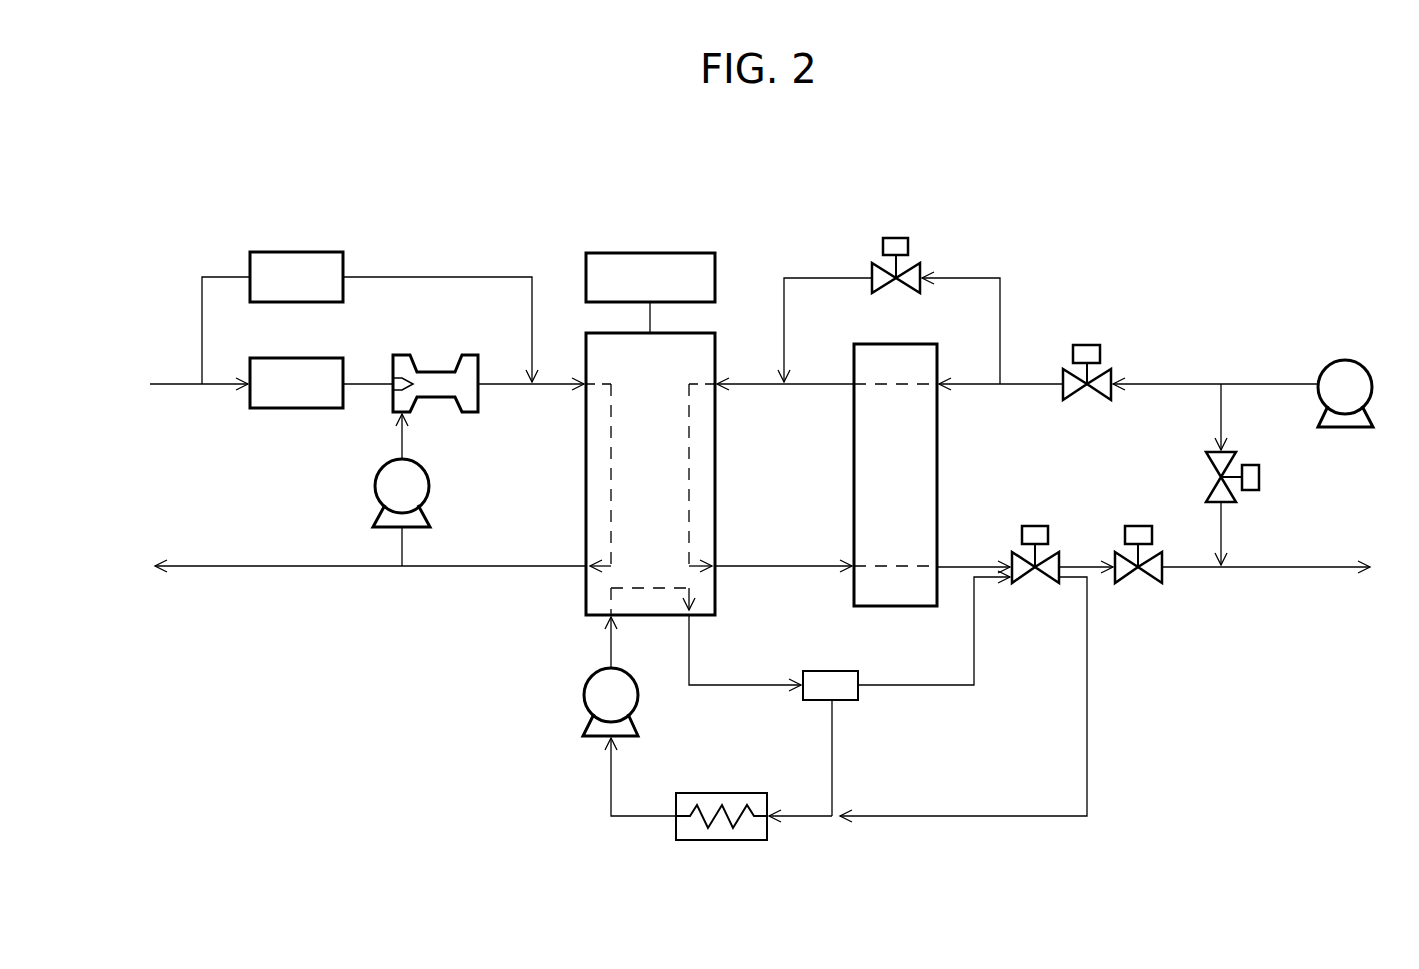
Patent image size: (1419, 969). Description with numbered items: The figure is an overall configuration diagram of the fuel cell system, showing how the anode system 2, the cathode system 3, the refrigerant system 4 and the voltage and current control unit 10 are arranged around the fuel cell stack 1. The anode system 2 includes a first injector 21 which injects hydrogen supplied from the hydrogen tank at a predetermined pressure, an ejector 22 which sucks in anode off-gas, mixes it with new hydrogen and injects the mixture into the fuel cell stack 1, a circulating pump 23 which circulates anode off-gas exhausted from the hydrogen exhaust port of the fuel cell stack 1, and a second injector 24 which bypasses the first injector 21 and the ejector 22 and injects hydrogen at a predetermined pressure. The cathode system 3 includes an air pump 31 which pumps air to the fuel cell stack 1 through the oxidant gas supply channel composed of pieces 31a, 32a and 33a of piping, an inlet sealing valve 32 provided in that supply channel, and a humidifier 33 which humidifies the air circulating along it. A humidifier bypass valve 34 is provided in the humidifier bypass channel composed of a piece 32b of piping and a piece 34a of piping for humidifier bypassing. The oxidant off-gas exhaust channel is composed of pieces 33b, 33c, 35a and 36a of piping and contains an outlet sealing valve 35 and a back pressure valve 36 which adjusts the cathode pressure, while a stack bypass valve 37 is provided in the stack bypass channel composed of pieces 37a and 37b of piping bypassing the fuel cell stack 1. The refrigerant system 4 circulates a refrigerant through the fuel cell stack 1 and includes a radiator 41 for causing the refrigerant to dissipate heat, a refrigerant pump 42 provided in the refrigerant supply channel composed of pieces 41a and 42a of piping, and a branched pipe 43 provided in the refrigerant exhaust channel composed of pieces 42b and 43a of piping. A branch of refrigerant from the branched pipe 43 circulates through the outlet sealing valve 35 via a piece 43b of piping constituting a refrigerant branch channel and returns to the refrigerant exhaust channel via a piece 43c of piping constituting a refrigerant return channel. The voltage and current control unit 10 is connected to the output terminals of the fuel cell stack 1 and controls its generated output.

The fuel cell stack 1 is at (586, 596).
The anode system 2 is at (436, 238).
The cathode system 3 is at (1160, 220).
The refrigerant system 4 is at (539, 779).
The voltage and current control unit 10 is at (617, 252).
The first injector 21 is at (268, 408).
The ejector 22 is at (435, 369).
The circulating pump 23 is at (430, 493).
The second injector 24 is at (270, 252).
The air pump 31 is at (1342, 360).
The piece of piping 31a is at (1206, 384).
The inlet sealing valve 32 is at (1101, 354).
The piece of piping 32a is at (973, 384).
The piece of piping 32b is at (1003, 297).
The humidifier 33 is at (853, 442).
The piece of piping 33a is at (826, 384).
The piece of piping 33b is at (753, 566).
The piece of piping 33c is at (973, 566).
The humidifier bypass valve 34 is at (910, 250).
The piece of piping for humidifier bypassing 34a is at (824, 278).
The outlet sealing valve 35 is at (1028, 526).
The piece of piping 35a is at (1088, 567).
The back pressure valve 36 is at (1143, 526).
The piece of piping 36a is at (1258, 567).
The stack bypass valve 37 is at (1261, 483).
The piece of piping 37a is at (1223, 416).
The piece of piping 37b is at (1223, 536).
The radiator 41 is at (695, 840).
The piece of piping 41a is at (613, 775).
The refrigerant pump 42 is at (584, 704).
The piece of piping 42a is at (610, 641).
The piece of piping 42b is at (756, 685).
The branched pipe 43 is at (814, 671).
The piece of piping 43a is at (803, 816).
The piece of piping 43b is at (908, 685).
The piece of piping 43c is at (1089, 658).